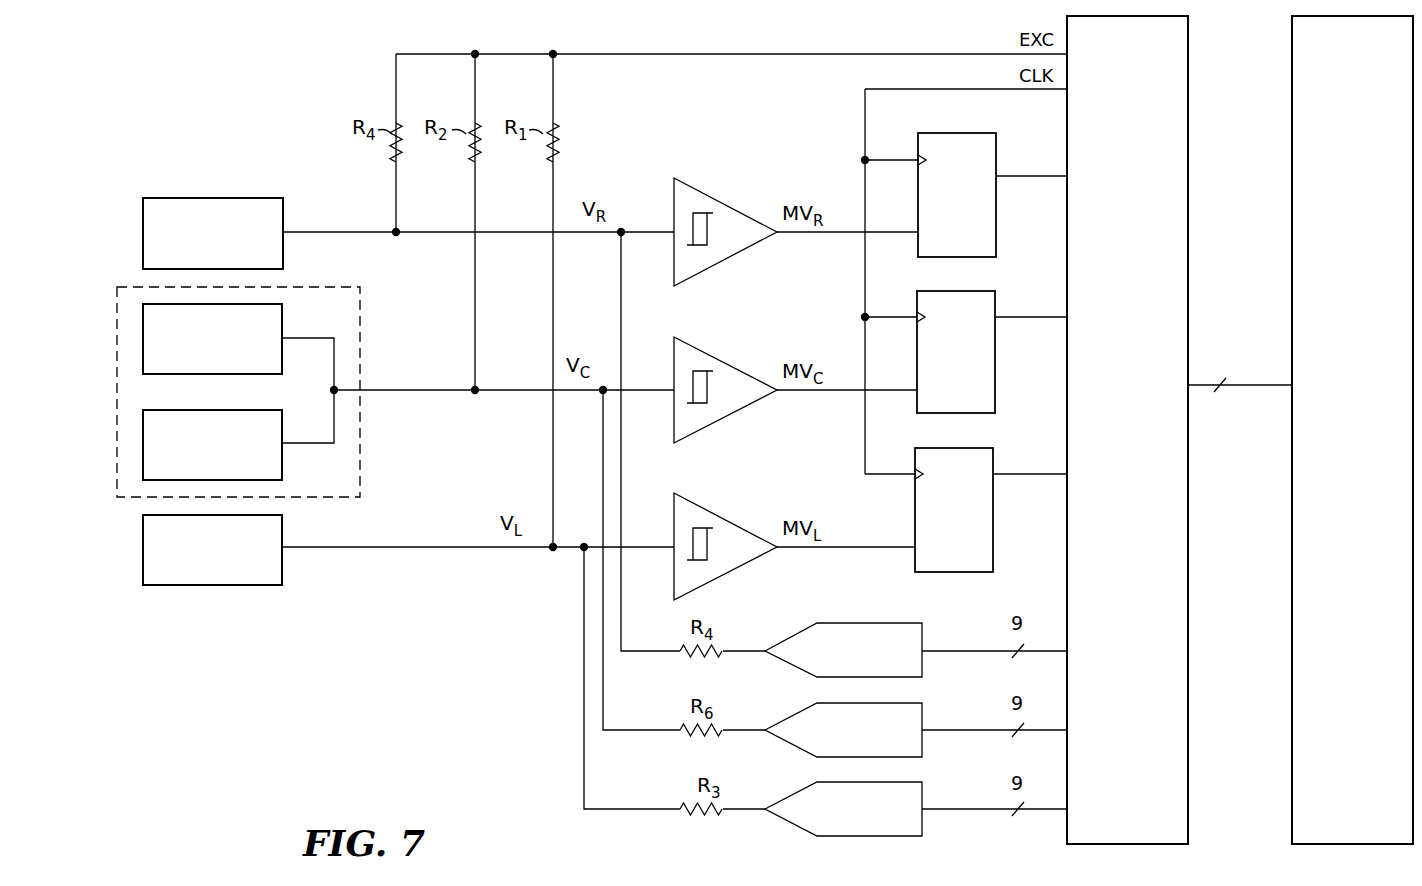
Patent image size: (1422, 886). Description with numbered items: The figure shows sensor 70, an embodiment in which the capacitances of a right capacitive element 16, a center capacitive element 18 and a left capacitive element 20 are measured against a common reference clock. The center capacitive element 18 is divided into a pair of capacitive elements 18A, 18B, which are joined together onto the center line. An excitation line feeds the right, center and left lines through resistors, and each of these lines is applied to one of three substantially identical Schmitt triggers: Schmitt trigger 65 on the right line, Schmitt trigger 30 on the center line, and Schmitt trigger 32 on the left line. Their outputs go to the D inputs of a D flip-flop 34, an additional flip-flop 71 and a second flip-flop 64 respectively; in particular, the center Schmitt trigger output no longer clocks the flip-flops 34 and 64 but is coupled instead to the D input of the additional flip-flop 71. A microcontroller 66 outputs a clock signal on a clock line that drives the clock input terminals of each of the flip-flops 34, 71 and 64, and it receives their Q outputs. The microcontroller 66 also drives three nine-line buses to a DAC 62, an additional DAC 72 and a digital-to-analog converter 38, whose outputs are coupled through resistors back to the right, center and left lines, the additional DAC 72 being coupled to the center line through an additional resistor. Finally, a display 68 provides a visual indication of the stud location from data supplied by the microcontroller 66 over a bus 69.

The right capacitive element 16 is at (226, 244).
The center capacitive element 18 is at (213, 392).
The capacitive element 18A is at (230, 350).
The capacitive element 18B is at (230, 456).
The left capacitive element 20 is at (226, 561).
The Schmitt trigger 65 is at (716, 191).
The Schmitt trigger 30 is at (714, 349).
The Schmitt trigger 32 is at (714, 506).
The D flip-flop 34 is at (970, 204).
The flip-flop 71 is at (969, 360).
The flip-flop 64 is at (967, 518).
The microcontroller 66 is at (1157, 804).
The display 68 is at (1382, 804).
The bus 69 is at (1247, 390).
The DAC 62 is at (922, 668).
The DAC 72 is at (922, 747).
The digital-to-analog converter 38 is at (922, 826).
The sensor 70 is at (460, 647).